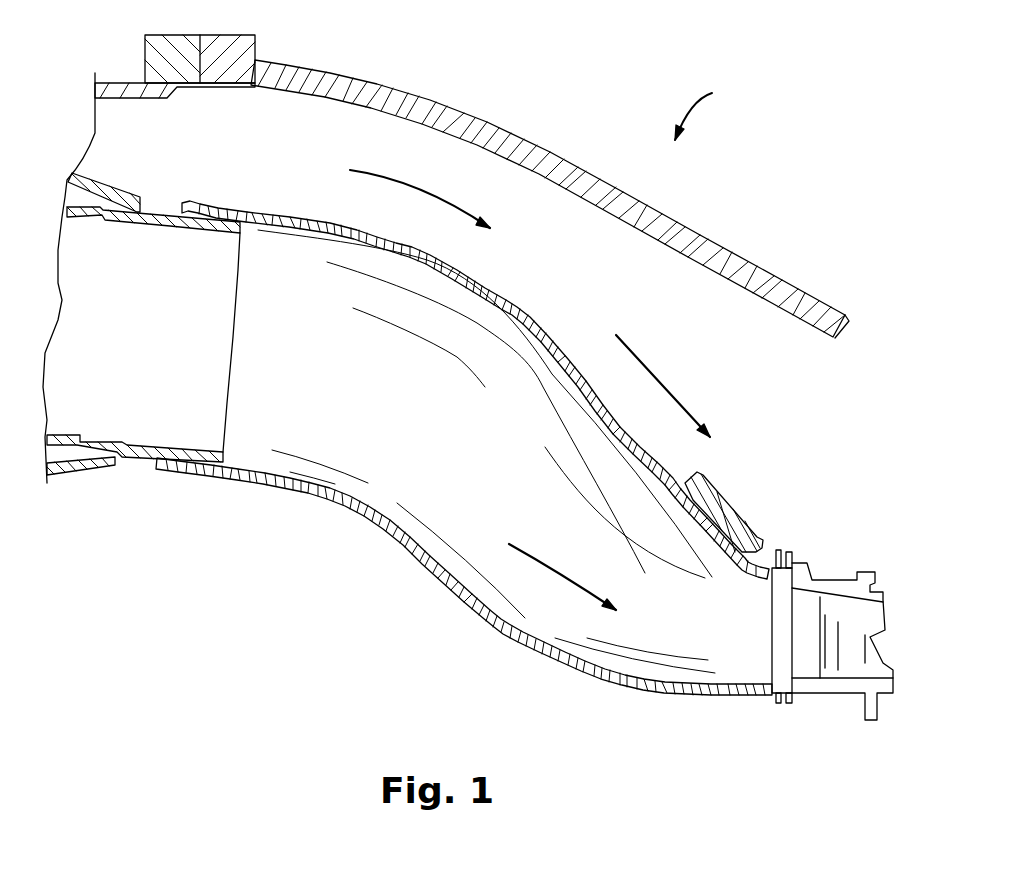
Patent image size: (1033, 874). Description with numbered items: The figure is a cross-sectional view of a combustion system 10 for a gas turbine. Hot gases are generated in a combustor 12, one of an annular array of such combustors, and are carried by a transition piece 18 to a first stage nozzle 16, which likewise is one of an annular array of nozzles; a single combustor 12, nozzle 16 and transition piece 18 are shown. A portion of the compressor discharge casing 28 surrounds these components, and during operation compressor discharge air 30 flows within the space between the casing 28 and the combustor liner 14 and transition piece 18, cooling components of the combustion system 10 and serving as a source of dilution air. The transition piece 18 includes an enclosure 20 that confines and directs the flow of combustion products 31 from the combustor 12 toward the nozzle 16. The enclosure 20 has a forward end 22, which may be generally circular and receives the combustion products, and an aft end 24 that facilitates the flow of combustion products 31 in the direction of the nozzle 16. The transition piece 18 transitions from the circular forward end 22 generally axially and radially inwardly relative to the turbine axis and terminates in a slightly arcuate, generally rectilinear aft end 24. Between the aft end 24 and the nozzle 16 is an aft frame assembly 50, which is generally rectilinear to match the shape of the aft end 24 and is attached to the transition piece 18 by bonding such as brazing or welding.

The combustion system 10 is at (709, 108).
The combustor 12 is at (137, 351).
The combustor liner 14 is at (103, 222).
The first stage nozzle 16 is at (835, 580).
The transition piece 18 is at (434, 468).
The enclosure 20 is at (505, 633).
The forward end 22 is at (312, 434).
The aft end 24 is at (733, 647).
The compressor discharge casing 28 is at (436, 106).
The compressor discharge air 30 is at (660, 368).
The combustion products 31 is at (557, 578).
The aft frame assembly 50 is at (780, 548).